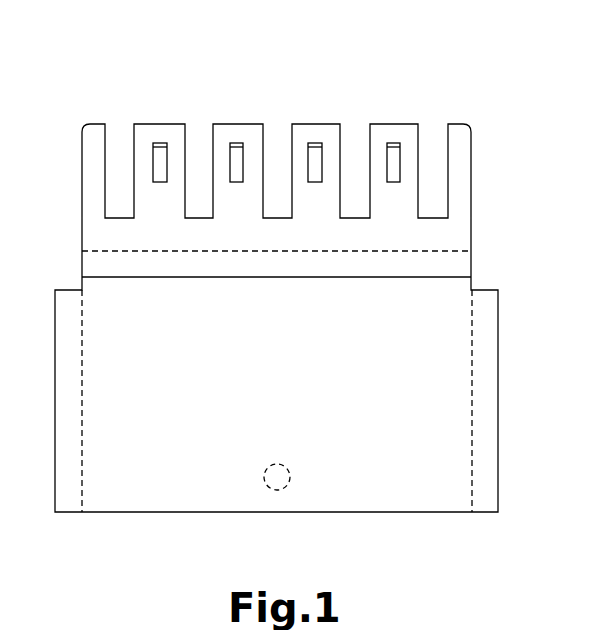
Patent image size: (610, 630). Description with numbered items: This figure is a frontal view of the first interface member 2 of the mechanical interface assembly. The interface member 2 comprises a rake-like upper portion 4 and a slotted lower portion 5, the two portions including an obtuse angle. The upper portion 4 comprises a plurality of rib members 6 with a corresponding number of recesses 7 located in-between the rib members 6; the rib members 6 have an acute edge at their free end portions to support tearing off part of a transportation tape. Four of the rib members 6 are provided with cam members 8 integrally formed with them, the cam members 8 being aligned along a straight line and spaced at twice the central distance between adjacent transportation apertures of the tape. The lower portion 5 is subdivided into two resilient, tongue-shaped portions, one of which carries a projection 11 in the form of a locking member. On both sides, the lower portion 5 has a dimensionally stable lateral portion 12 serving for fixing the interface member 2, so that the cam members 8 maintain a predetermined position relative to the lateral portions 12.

The first interface member 2 is at (323, 74).
The upper portion 4 is at (482, 168).
The lower portion 5 is at (505, 413).
The rib members 6 is at (96, 127).
The recesses 7 is at (198, 127).
The cam members 8 is at (240, 145).
The projection 11 is at (283, 487).
The lateral portion 12 is at (58, 320).